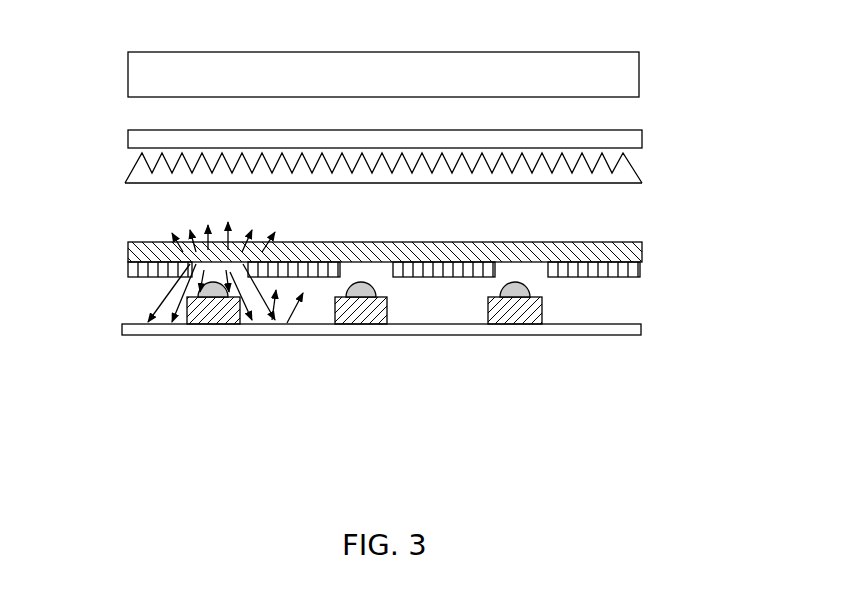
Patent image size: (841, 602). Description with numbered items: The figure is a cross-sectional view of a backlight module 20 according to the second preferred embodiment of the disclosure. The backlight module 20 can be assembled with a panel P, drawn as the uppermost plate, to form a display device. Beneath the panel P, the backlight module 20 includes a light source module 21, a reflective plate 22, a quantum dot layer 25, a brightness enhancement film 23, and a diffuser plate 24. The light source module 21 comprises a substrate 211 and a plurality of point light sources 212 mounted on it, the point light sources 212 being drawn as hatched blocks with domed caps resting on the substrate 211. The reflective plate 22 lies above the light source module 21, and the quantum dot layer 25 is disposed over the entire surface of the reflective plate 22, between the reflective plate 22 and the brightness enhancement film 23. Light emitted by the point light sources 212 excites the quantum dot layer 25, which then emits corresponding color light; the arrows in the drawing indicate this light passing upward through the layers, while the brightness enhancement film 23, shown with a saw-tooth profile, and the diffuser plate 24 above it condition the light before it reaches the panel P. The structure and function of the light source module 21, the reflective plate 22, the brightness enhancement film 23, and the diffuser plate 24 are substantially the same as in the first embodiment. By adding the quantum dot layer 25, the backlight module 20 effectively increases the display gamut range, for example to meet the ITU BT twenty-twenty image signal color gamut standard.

The panel P is at (639, 64).
The backlight module 20 is at (85, 133).
The light source module 21 is at (390, 394).
The substrate 211 is at (612, 336).
The point light sources 212 is at (364, 358).
The reflective plate 22 is at (640, 273).
The brightness enhancement film 23 is at (642, 183).
The diffuser plate 24 is at (642, 137).
The quantum dot layer 25 is at (642, 250).